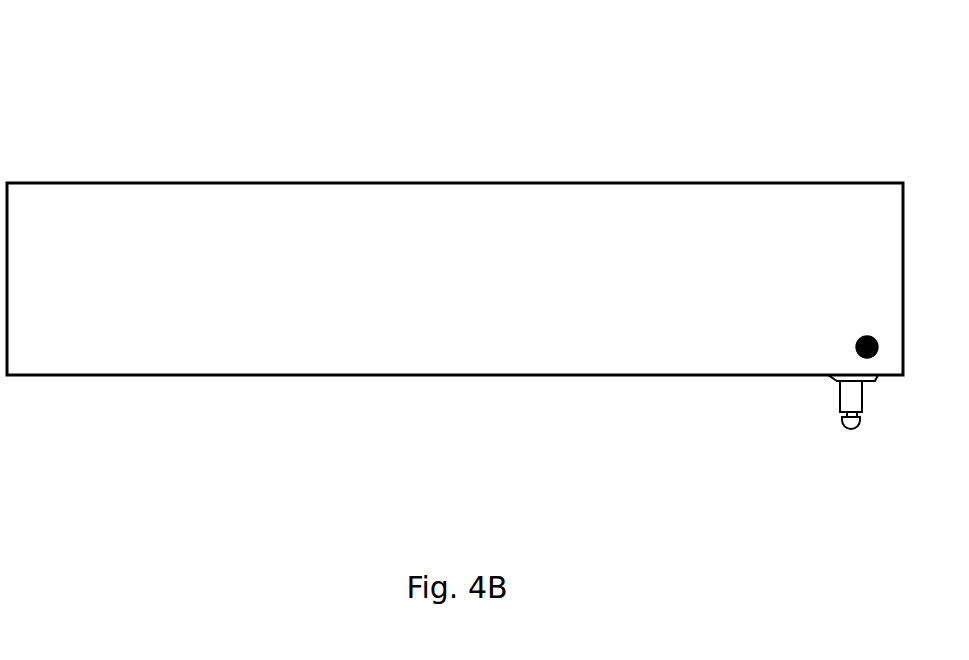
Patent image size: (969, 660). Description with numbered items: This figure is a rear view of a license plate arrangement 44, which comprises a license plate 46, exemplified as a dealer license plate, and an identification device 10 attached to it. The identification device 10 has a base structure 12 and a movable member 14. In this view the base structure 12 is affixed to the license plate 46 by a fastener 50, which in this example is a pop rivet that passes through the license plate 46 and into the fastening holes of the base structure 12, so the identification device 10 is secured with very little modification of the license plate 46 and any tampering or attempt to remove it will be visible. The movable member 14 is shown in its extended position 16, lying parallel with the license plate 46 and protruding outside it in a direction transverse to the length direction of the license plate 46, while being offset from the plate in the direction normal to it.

The license plate arrangement 44 is at (465, 282).
The license plate 46 is at (197, 215).
The fastener 50 is at (866, 336).
The base structure 12 is at (840, 373).
The movable member 14 is at (853, 398).
The identification device 10 is at (834, 403).
The extended position 16 is at (884, 451).